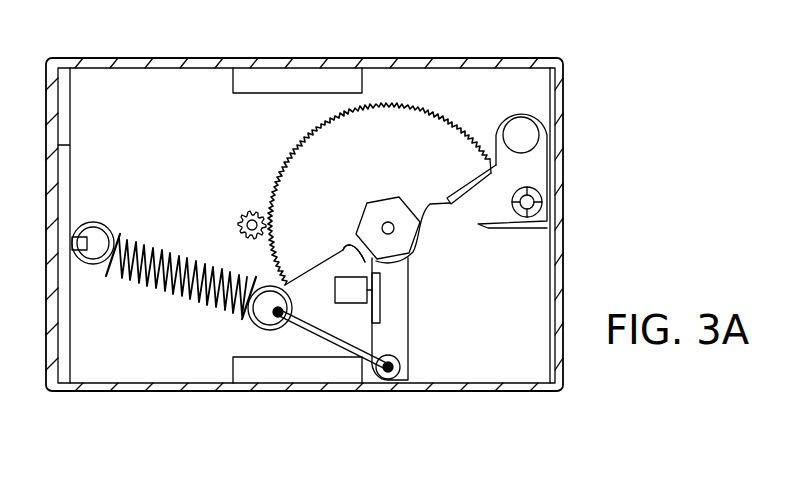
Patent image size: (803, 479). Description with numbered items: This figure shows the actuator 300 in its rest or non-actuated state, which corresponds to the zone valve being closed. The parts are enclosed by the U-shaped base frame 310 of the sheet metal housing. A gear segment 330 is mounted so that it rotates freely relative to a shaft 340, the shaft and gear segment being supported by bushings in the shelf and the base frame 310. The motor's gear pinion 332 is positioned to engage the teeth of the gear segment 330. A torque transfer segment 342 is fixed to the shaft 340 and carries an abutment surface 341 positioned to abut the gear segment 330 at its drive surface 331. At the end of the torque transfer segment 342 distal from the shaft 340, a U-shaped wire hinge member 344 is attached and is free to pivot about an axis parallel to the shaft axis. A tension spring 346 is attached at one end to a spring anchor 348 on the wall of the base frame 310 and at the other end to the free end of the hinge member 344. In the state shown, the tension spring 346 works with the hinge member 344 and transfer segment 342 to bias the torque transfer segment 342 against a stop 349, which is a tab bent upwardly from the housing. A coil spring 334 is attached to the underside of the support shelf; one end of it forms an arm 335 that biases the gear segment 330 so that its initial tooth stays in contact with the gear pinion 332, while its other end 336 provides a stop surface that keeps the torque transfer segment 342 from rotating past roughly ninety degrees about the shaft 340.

The actuator 300 is at (542, 33).
The U-shaped base frame 310 is at (245, 62).
The gear segment 330 is at (400, 123).
The drive surface 331 is at (318, 266).
The gear pinion 332 is at (243, 215).
The coil spring 334 is at (528, 133).
The arm 335 is at (469, 193).
The other end of coil spring 336 is at (517, 230).
The shaft 340 is at (394, 232).
The abutment surface 341 is at (364, 288).
The torque transfer segment 342 is at (398, 338).
The U-shaped hinge member 344 is at (303, 326).
The tension spring 346 is at (163, 298).
The spring anchor 348 is at (74, 232).
The stop 349 is at (361, 304).